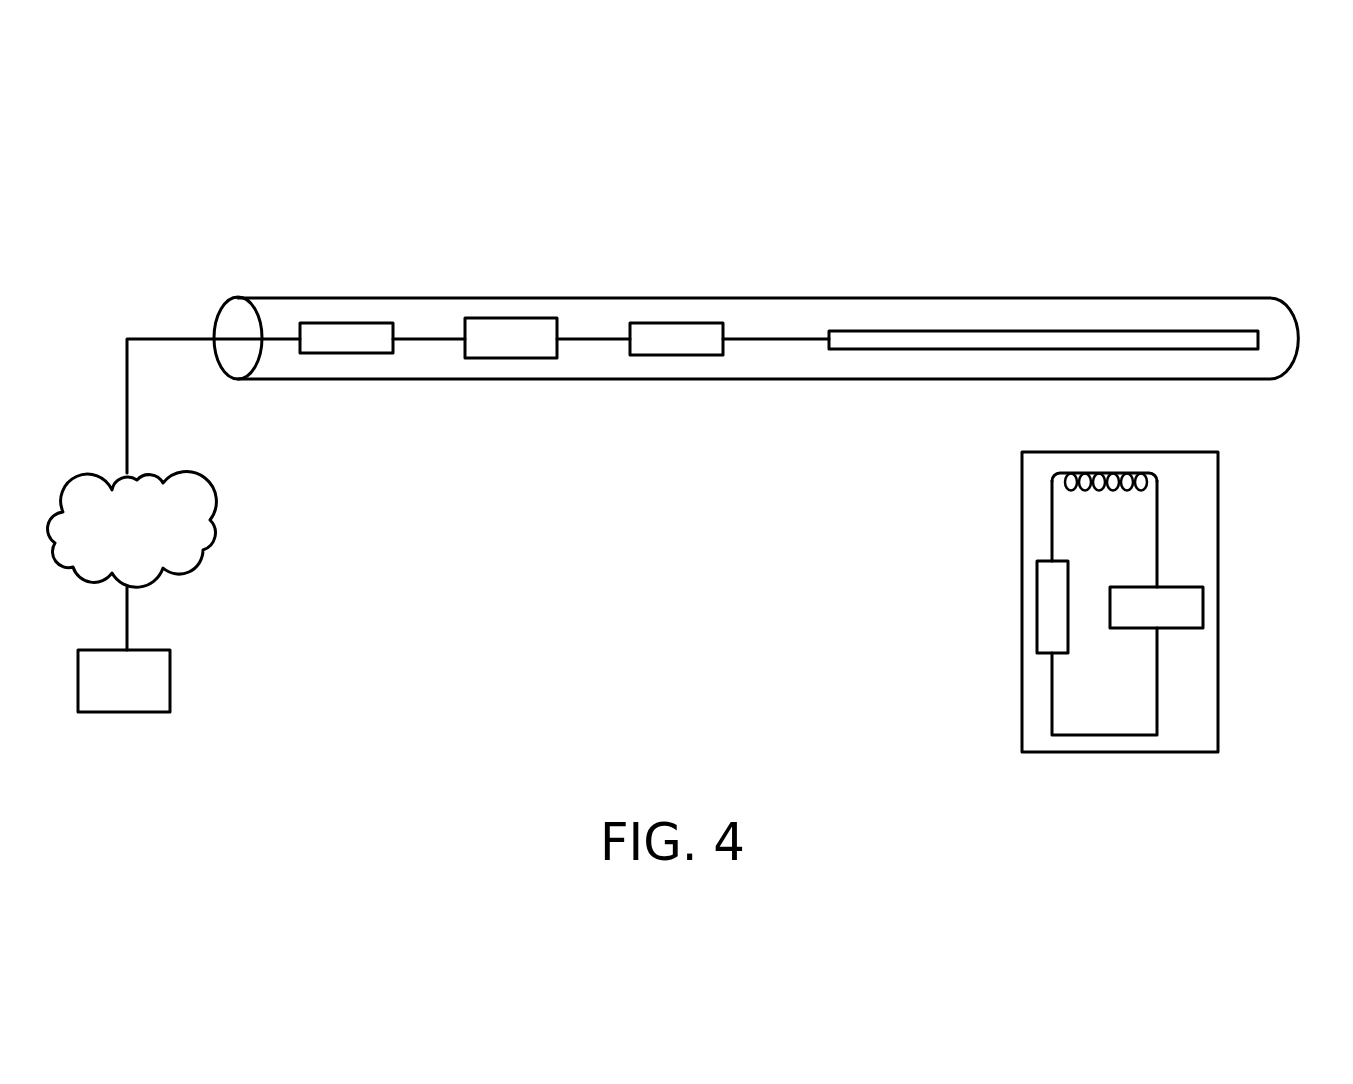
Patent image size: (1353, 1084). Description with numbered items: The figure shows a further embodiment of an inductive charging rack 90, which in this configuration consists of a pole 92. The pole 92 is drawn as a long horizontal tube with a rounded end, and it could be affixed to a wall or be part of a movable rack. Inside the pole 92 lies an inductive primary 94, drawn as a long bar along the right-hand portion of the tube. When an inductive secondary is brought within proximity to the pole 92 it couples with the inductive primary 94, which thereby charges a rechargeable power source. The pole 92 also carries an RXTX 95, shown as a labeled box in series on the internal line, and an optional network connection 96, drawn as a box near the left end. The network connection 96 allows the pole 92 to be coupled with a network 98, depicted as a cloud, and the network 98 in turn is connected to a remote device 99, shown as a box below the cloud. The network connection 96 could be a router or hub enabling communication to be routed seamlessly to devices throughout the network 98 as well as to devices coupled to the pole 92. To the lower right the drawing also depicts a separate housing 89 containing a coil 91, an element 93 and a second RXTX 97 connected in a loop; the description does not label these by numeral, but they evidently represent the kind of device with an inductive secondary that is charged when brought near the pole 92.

The tag housing 89 is at (1022, 518).
The charging rack 90 is at (1137, 240).
The coil antenna 91 is at (1105, 472).
The pole 92 is at (228, 297).
The sensor / battery element 93 is at (1037, 614).
The inductive primary 94 is at (923, 330).
The RXTX 95 is at (505, 318).
The network connection 96 is at (355, 354).
The tag transceiver RXTX 97 is at (1203, 607).
The network 98 is at (218, 530).
The remote device 99 is at (170, 678).